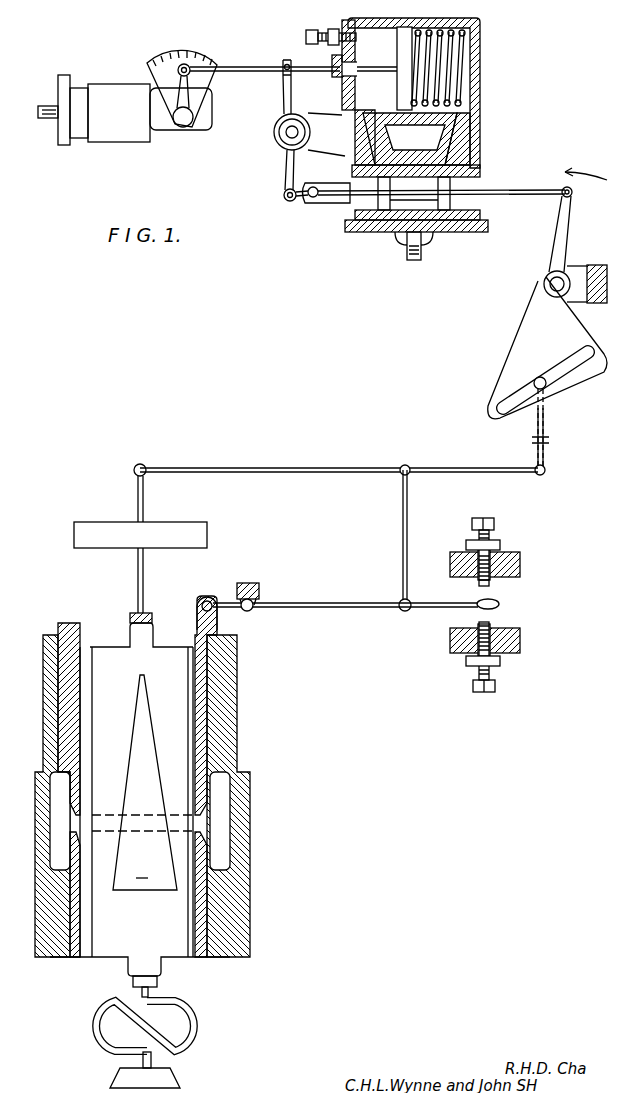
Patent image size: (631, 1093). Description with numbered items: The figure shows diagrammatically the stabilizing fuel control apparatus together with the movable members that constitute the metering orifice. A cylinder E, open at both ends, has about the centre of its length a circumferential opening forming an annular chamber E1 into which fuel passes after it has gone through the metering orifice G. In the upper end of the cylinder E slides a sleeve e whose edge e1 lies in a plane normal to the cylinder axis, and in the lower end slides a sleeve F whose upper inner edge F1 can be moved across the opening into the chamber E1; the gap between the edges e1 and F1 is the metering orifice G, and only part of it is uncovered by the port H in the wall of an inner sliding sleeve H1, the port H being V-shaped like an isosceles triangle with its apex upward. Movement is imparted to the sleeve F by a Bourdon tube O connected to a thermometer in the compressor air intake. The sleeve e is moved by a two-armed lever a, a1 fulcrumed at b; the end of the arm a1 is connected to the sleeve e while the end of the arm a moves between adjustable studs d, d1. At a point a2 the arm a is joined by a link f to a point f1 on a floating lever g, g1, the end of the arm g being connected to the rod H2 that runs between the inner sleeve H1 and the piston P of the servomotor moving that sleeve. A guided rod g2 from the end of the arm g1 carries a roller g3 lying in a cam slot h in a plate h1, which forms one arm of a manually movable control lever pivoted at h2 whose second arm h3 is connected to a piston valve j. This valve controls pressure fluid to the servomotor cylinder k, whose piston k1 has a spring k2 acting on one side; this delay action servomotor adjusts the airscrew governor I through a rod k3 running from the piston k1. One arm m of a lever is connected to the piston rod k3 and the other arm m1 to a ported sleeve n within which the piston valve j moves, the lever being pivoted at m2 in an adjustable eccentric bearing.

The airscrew governor I is at (99, 105).
The piston rod k3 is at (234, 67).
The servomotor cylinder k is at (360, 28).
The piston k1 is at (410, 52).
The spring k2 is at (445, 83).
The lever arm m is at (284, 96).
The lever arm m1 is at (286, 167).
The pivot m2 is at (286, 133).
The ported sleeve n is at (366, 216).
The piston valve j is at (414, 205).
The second arm h3 is at (562, 243).
The pivot h2 is at (567, 277).
The plate h1 is at (570, 320).
The cam slot h is at (578, 365).
The roller g3 is at (546, 387).
The guided rod g2 is at (548, 433).
The floating lever arm g1 is at (458, 468).
The floating lever arm g is at (212, 468).
The connection point f1 is at (404, 464).
The link f is at (402, 560).
The connection point a2 is at (405, 612).
The lever arm a is at (294, 604).
The lever arm a1 is at (207, 600).
The fulcrum b is at (256, 598).
The servomotor piston P is at (186, 533).
The rod H2 is at (137, 582).
The adjustable stud d is at (492, 543).
The adjustable stud d1 is at (496, 673).
The cylinder E is at (60, 745).
The sliding sleeve e is at (76, 670).
The annular chamber E1 is at (222, 790).
The sleeve F is at (205, 918).
The edge F1 is at (173, 831).
The inner sliding sleeve H1 is at (205, 672).
The metering orifice G is at (140, 823).
The port H is at (141, 869).
The edge e1 is at (187, 816).
The Bourdon tube O is at (208, 1016).